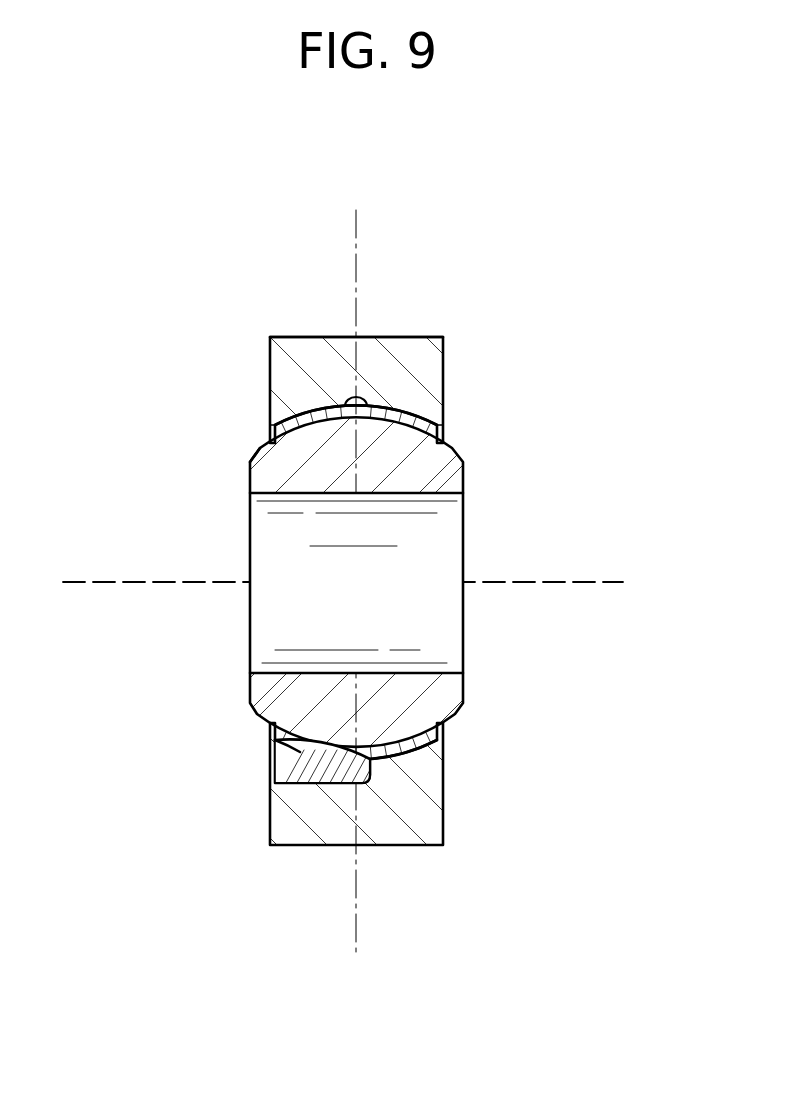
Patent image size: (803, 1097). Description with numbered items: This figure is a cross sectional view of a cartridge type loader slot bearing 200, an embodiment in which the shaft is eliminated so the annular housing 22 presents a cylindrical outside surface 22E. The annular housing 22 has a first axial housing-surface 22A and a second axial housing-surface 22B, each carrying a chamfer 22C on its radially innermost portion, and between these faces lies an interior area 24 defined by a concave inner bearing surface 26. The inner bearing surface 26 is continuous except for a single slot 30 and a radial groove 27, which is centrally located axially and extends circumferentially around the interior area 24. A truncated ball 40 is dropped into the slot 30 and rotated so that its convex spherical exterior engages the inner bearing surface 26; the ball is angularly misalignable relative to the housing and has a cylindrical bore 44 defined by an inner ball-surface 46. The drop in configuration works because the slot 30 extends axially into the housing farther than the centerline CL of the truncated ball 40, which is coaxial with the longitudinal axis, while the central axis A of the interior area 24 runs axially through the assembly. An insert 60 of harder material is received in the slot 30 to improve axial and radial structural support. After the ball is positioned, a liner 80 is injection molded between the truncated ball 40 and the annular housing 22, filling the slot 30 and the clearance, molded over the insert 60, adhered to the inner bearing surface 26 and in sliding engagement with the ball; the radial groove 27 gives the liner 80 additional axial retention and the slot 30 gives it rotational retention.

The cartridge type loader slot bearing 200 is at (630, 240).
The annular housing 22 is at (284, 382).
The first axial housing-surface 22A is at (271, 421).
The second axial housing-surface 22B is at (445, 402).
The chamfer 22C is at (258, 442).
The cylindrical outside surface 22E is at (400, 337).
The interior area 24 is at (259, 456).
The inner bearing surface 26 is at (407, 411).
The radial groove 27 is at (354, 396).
The slot 30 is at (258, 749).
The truncated ball 40 is at (437, 700).
The cylindrical bore 44 is at (286, 557).
The inner ball-surface 46 is at (448, 494).
The insert 60 is at (283, 763).
The liner 80 is at (270, 727).
The central axis A is at (92, 570).
The centerline CL is at (370, 537).